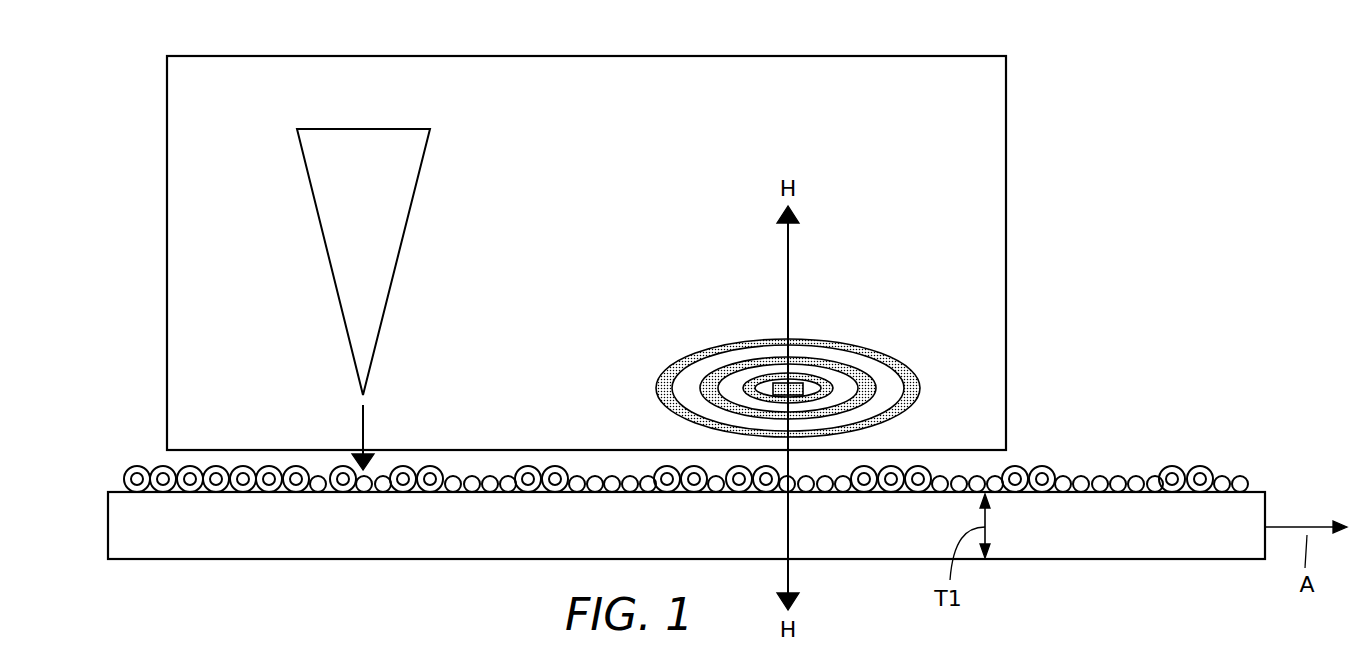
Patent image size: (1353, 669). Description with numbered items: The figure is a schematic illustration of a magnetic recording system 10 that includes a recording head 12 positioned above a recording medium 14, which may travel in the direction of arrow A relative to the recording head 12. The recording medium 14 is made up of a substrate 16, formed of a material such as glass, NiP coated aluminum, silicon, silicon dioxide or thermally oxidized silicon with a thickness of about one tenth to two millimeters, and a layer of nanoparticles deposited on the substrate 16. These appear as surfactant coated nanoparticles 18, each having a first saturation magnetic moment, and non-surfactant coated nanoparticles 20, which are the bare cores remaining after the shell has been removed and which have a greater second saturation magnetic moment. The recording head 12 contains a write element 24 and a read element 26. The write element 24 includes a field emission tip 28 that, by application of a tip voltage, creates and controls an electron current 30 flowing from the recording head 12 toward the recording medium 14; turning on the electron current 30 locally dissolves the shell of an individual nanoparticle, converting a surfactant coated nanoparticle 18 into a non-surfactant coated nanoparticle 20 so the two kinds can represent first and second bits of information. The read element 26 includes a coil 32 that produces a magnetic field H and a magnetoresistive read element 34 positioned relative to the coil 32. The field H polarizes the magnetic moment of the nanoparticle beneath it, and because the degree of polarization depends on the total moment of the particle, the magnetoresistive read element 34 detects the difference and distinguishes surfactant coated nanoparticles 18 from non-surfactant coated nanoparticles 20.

The magnetic recording system 10 is at (1176, 149).
The recording head 12 is at (1006, 232).
The recording medium 14 is at (649, 511).
The substrate 16 is at (1103, 561).
The surfactant coated nanoparticles 18 is at (122, 496).
The non-surfactant coated nanoparticles 20 is at (364, 492).
The write element 24 is at (405, 126).
The read element 26 is at (788, 361).
The field emission tip 28 is at (375, 356).
The electron current 30 is at (365, 428).
The coil 32 is at (700, 352).
The magnetoresistive read element 34 is at (782, 383).